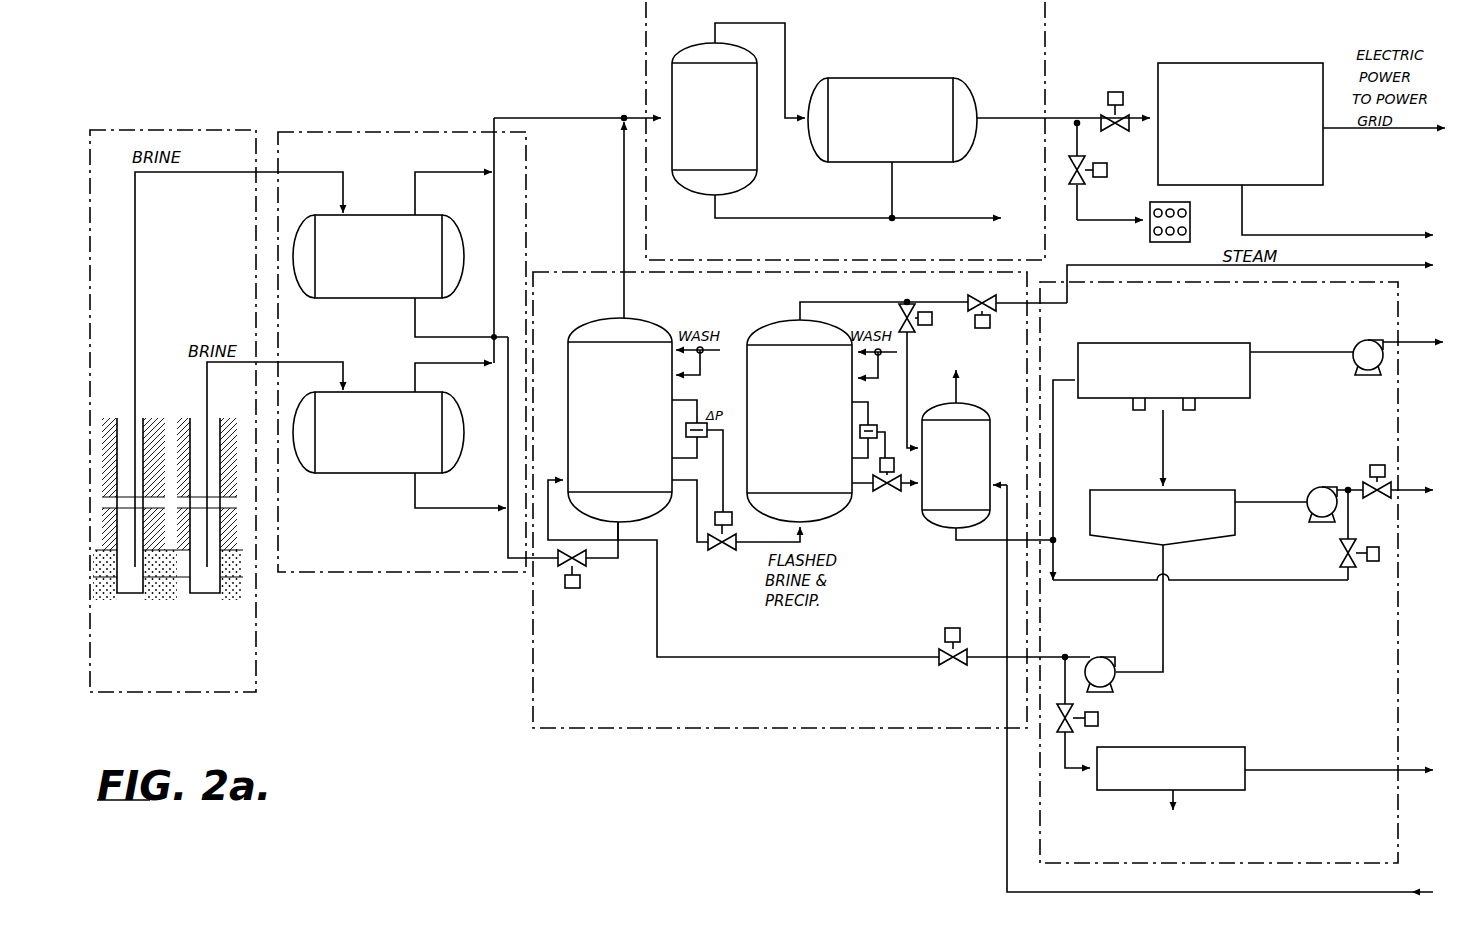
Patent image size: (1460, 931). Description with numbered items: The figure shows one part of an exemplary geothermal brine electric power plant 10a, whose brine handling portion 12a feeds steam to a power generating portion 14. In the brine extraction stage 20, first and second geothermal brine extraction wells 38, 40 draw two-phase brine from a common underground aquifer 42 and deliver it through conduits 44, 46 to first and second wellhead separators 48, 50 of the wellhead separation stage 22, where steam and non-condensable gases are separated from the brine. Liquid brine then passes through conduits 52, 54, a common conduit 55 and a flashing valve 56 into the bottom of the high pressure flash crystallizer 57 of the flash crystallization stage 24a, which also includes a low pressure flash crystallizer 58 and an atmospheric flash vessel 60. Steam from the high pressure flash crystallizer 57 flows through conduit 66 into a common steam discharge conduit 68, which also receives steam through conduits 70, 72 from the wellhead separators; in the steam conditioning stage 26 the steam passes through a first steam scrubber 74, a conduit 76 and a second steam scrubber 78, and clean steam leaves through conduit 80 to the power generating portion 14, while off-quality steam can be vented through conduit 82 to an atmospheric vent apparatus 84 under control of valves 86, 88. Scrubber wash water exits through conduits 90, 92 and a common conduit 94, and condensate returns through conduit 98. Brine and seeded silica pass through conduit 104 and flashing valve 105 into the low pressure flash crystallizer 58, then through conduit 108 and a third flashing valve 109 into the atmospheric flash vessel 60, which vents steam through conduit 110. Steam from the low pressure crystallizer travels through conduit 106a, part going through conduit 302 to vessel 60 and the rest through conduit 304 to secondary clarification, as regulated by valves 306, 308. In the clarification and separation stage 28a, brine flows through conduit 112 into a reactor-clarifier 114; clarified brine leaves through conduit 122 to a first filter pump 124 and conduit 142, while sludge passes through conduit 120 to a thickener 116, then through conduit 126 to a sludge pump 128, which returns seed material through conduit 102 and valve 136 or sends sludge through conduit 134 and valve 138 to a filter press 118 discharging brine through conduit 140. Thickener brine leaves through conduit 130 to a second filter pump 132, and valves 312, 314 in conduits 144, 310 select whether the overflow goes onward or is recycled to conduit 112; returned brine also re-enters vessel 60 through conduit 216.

The geothermal brine electric power plant 10a is at (804, 752).
The brine handling portion 12a is at (834, 668).
The power generating portion 14 is at (1249, 54).
The brine extraction stage 20 is at (170, 128).
The wellhead separation stage 22 is at (412, 130).
The flash crystallization stage 24a is at (533, 658).
The steam conditioning stage 26 is at (646, 45).
The brine clarification and separation stage 28a is at (1035, 815).
The first geothermal brine extraction well 38 is at (124, 422).
The second geothermal brine extraction well 40 is at (212, 422).
The underground aquifer 42 is at (234, 582).
The conduit 44 is at (135, 237).
The conduit 46 is at (207, 372).
The first wellhead separator 48 is at (392, 214).
The second wellhead separator 50 is at (392, 390).
The conduit 52 is at (415, 327).
The conduit 54 is at (415, 498).
The common conduit 55 is at (622, 534).
The flashing valve 56 is at (572, 588).
The high pressure flash crystallizer 57 is at (668, 326).
The low pressure flash crystallizer 58 is at (782, 322).
The atmospheric flash vessel 60 is at (982, 410).
The conduit 66 is at (624, 223).
The common steam discharge conduit 68 is at (596, 118).
The conduit 70 is at (460, 172).
The conduit 72 is at (460, 362).
The first steam scrubber 74 is at (698, 46).
The conduit 76 is at (786, 42).
The second steam scrubber 78 is at (904, 77).
The conduit 80 is at (1030, 128).
The conduit 82 is at (1120, 212).
The atmospheric vent apparatus 84 is at (1190, 218).
The valve 86 is at (1107, 165).
The valve 88 is at (1119, 92).
The conduit 90 is at (816, 217).
The conduit 92 is at (892, 188).
The common conduit 94 is at (993, 228).
The conduit 98 is at (1394, 238).
The conduit 102 is at (906, 658).
The conduit 104 is at (708, 548).
The flashing valve 105 is at (732, 554).
The conduit 106a is at (886, 284).
The conduit 108 is at (910, 512).
The third flashing valve 109 is at (888, 492).
The conduit 110 is at (962, 398).
The conduit 112 is at (1053, 432).
The reactor-clarifier 114 is at (1162, 339).
The thickener 116 is at (1187, 490).
The filter press 118 is at (1180, 742).
The conduit 120 is at (1163, 462).
The conduit 122 is at (1322, 362).
The first filter pump 124 is at (1382, 338).
The conduit 126 is at (1163, 615).
The sludge pump 128 is at (1098, 658).
The conduit 130 is at (1293, 512).
The second filter pump 132 is at (1330, 483).
The conduit 134 is at (1076, 770).
The valve 136 is at (960, 626).
The valve 138 is at (1098, 716).
The conduit 140 is at (1415, 744).
The conduit 142 is at (1420, 324).
The conduit 144 is at (1423, 474).
The conduit 216 is at (1393, 892).
The conduit 302 is at (912, 388).
The conduit 304 is at (1007, 297).
The valve 306 is at (898, 318).
The valve 308 is at (982, 328).
The conduit 310 is at (1197, 586).
The valve 312 is at (1380, 464).
The valve 314 is at (1345, 560).